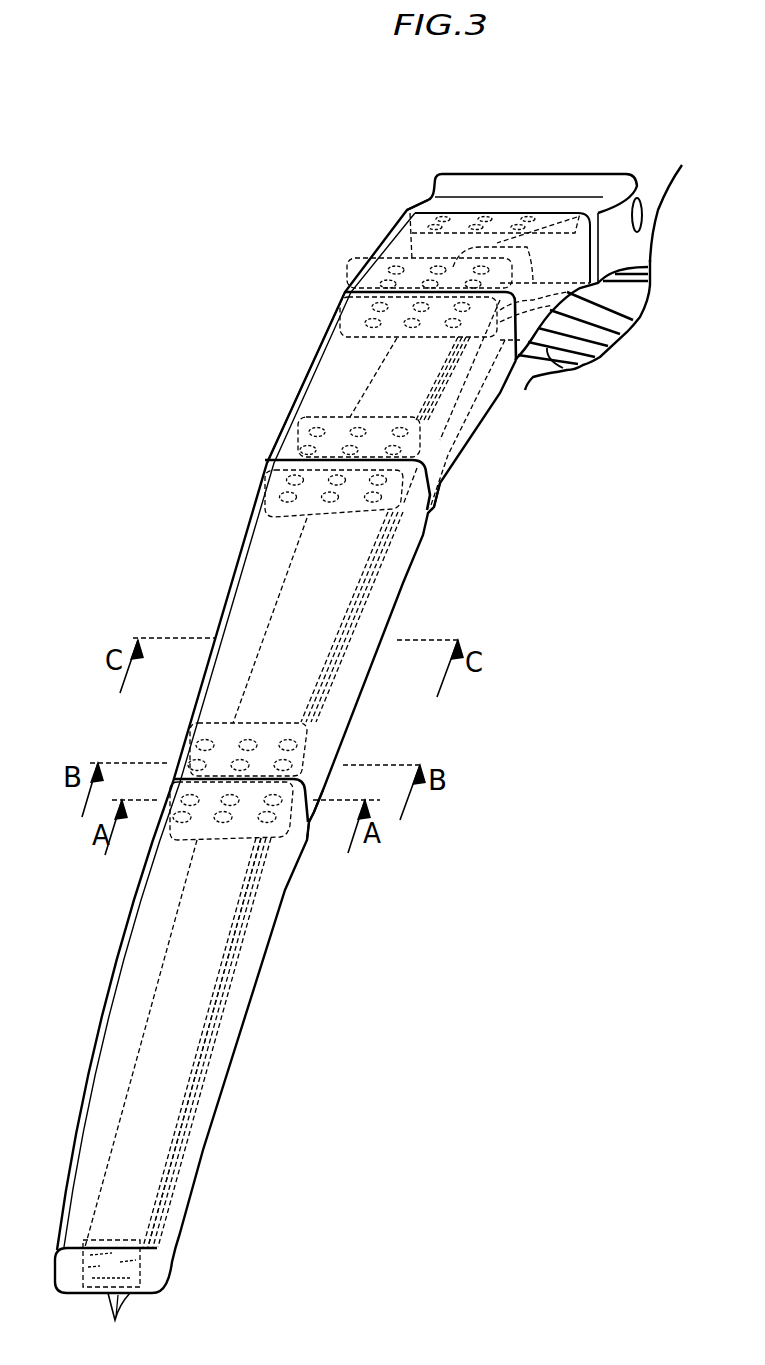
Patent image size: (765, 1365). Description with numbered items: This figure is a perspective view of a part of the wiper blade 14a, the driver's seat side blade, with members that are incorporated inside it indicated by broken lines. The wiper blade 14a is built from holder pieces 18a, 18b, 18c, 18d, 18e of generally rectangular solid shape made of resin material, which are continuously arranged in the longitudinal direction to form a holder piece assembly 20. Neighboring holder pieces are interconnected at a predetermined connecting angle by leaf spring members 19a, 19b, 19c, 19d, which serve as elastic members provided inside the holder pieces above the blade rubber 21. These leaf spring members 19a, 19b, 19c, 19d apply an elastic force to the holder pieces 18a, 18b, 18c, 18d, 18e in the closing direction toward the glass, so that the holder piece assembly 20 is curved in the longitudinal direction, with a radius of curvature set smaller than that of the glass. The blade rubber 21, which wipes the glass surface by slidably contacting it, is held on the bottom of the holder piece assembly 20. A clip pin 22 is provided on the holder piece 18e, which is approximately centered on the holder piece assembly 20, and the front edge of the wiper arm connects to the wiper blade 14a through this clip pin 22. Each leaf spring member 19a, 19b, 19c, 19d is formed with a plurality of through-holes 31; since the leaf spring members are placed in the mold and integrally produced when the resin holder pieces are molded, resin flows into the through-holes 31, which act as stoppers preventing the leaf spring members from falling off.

The wiper blade 14a is at (226, 408).
The holder piece 18a is at (120, 970).
The holder piece 18b is at (247, 530).
The holder piece 18c is at (310, 368).
The holder piece 18d is at (387, 242).
The holder piece 18e is at (540, 178).
The leaf spring member 19a is at (260, 843).
The leaf spring member 19b is at (403, 505).
The leaf spring member 19c is at (503, 345).
The leaf spring member 19d is at (422, 195).
The holder piece assembly 20 is at (208, 596).
The blade rubber 21 is at (157, 1080).
The clip pin 22 is at (645, 200).
The through-holes 31 is at (460, 282).